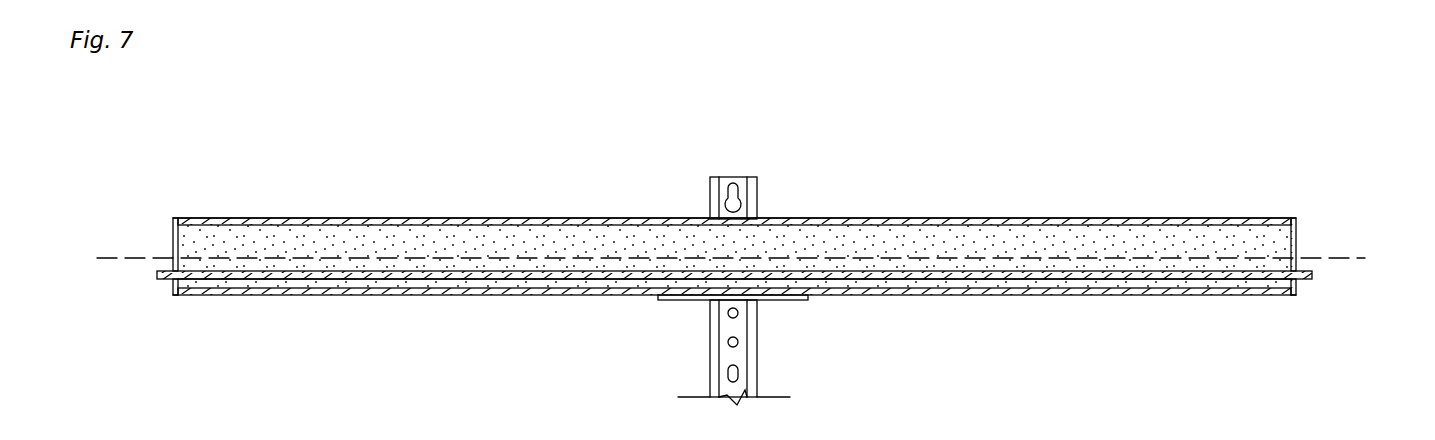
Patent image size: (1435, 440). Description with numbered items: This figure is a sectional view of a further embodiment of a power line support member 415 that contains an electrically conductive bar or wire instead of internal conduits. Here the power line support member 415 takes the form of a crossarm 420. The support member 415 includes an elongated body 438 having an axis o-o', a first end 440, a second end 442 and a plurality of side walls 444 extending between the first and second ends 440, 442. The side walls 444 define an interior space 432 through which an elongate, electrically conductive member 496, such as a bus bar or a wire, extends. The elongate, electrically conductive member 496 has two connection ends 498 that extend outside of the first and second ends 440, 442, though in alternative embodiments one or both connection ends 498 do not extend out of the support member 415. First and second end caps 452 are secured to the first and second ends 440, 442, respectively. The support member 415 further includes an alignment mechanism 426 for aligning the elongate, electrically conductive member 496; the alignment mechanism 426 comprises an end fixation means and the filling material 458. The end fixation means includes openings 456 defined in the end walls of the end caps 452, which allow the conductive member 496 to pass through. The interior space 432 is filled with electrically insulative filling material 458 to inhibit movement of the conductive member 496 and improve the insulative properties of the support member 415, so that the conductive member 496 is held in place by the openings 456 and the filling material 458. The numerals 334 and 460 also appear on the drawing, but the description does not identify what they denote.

The panel assembly 334 is at (768, 0).
The panel 415 is at (1103, 142).
The core 426 is at (617, 212).
The upper core layer 458 is at (675, 238).
The lower core layer 432 is at (858, 242).
The top plate 444 is at (478, 218).
The top skin 438 is at (563, 218).
The bottom plate 420 is at (570, 295).
The intermediate plate 498 is at (160, 279).
The adhesive layer 496 is at (982, 278).
The left edge cap 440 is at (174, 236).
The right edge cap 442 is at (1294, 237).
The cap upper flange 452 is at (176, 223).
The cap lower flange 456 is at (175, 285).
The support post 460 is at (757, 348).